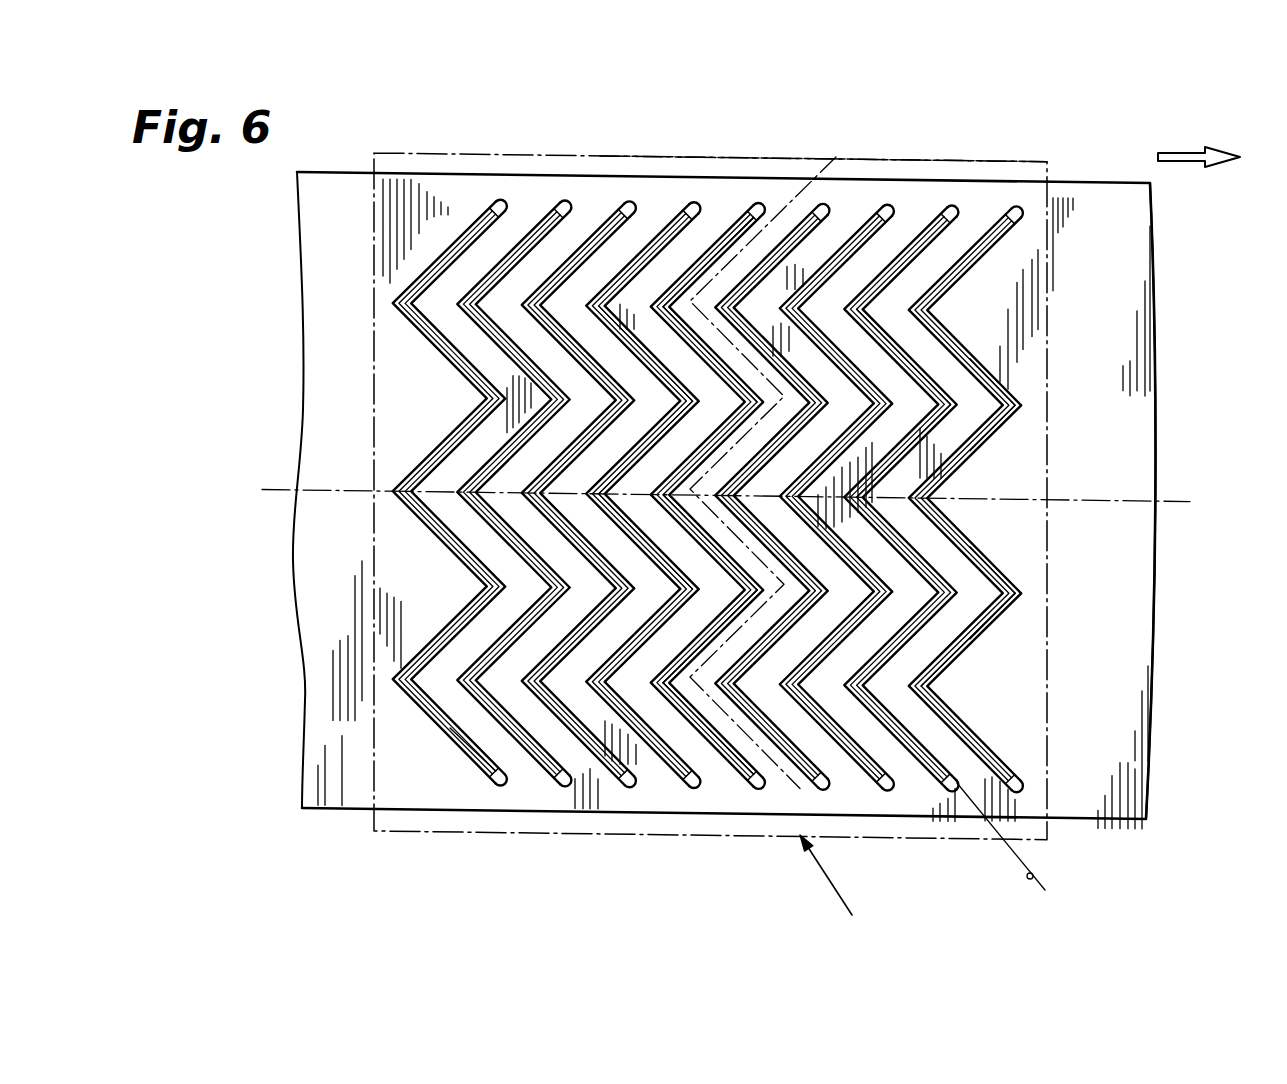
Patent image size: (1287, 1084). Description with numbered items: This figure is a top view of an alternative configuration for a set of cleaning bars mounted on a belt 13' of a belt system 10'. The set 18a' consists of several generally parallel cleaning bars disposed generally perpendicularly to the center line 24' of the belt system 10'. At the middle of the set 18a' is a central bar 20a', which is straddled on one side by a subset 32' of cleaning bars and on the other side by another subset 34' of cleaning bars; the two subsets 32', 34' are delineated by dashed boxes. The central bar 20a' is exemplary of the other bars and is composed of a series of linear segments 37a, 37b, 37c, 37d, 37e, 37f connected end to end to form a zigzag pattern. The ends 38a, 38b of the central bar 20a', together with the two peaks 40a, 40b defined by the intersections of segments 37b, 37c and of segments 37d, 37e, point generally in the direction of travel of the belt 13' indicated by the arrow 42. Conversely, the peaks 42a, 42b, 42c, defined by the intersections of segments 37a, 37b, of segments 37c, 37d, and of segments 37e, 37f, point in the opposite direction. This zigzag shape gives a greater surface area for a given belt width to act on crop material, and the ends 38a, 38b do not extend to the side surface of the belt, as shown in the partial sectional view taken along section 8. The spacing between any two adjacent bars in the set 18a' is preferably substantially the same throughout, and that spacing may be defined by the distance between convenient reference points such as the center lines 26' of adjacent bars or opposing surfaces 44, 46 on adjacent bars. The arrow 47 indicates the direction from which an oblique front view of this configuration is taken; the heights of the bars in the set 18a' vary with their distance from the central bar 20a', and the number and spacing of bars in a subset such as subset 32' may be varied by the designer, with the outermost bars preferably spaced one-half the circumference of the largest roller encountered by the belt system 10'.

The section 8— 8 is at (823, 162).
The belt system 10' is at (724, 444).
The belt 13' is at (1144, 448).
The set of cleaning bars 18a' is at (455, 811).
The central bar 20a' is at (706, 162).
The center line 24' is at (756, 459).
The center lines 26' is at (1057, 836).
The subset of cleaning bars 32' is at (676, 451).
The subset of cleaning bars 34' is at (823, 111).
The linear segment 37a is at (703, 747).
The linear segment 37b is at (682, 655).
The linear segment 37c is at (683, 532).
The linear segment 37d is at (958, 408).
The linear segment 37e is at (680, 345).
The linear segment 37f is at (665, 268).
The end of the central bar 38a is at (746, 240).
The end of the central bar 38b is at (740, 787).
The peak 40a is at (1015, 592).
The peak 40b is at (1015, 400).
The arrow 42 is at (1192, 150).
The peak 42a is at (692, 668).
The peak 42b is at (668, 492).
The peak 42c is at (660, 380).
The opposing surface 44 is at (1025, 603).
The opposing surface 46 is at (952, 662).
The arrow 47 is at (831, 892).